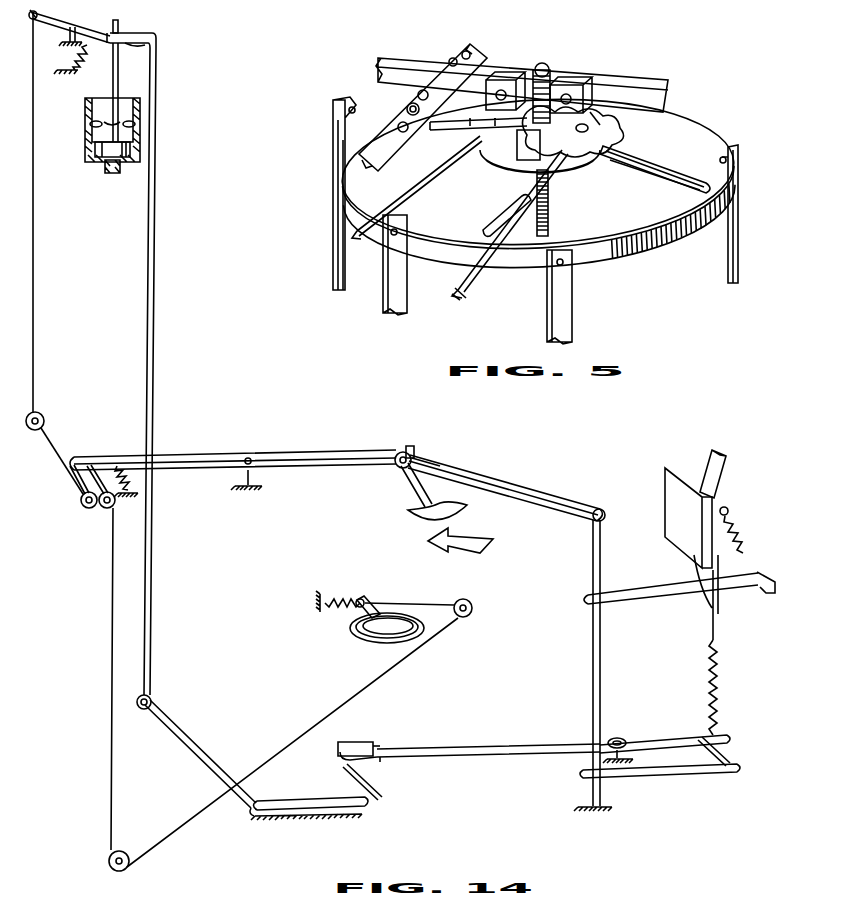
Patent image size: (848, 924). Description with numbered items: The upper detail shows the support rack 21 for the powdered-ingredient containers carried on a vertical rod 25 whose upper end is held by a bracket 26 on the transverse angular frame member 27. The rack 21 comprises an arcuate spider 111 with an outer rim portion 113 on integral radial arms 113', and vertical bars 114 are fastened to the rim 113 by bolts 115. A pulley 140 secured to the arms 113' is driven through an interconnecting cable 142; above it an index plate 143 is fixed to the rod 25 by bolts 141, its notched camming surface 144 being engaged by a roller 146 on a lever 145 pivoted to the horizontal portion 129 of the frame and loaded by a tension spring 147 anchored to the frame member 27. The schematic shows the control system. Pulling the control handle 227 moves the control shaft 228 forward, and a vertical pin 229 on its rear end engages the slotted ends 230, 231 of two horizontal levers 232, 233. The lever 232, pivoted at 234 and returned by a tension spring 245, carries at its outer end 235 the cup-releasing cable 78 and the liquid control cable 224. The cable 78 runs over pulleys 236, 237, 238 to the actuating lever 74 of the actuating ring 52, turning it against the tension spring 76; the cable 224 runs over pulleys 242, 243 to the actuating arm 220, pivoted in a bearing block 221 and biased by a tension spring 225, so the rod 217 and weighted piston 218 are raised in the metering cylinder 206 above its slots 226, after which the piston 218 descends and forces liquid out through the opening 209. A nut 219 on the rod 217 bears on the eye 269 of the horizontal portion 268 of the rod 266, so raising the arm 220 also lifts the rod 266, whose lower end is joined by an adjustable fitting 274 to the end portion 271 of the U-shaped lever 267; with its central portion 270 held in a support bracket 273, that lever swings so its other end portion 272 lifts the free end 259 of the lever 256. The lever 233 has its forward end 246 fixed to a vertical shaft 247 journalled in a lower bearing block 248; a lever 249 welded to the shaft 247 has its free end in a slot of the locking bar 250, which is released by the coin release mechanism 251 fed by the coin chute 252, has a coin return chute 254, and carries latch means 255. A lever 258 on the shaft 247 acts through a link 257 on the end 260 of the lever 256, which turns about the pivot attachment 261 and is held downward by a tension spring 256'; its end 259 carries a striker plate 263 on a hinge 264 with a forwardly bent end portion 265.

In FIG. 5, the support rack 21 is at (596, 266).
In FIG. 5, the rod or shaft 25 is at (552, 212).
In FIG. 5, the bracket 26 is at (545, 64).
In FIG. 5, the transverse angular frame member 27 is at (655, 80).
In FIG. 14, the actuating ring 52 is at (388, 646).
In FIG. 14, the radial actuating arm or lever 74 is at (362, 596).
In FIG. 14, the tension spring 76 is at (328, 598).
In FIG. 14, the cup releasing actuating cable 78 is at (412, 602).
In FIG. 5, the arcuate spider 111 is at (636, 160).
In FIG. 5, the outer rim portion 113 is at (670, 228).
In FIG. 5, the integral radial arms 113' is at (572, 198).
In FIG. 5, the vertical spaced bars 114 is at (340, 215).
In FIG. 5, the bolts 115 is at (333, 108).
In FIG. 5, the horizontal forwardly extending portion 129 is at (478, 38).
In FIG. 5, the mating pulley 140 is at (560, 172).
In FIG. 5, the bolts 141 is at (485, 120).
In FIG. 5, the interconnecting cable 142 is at (456, 288).
In FIG. 5, the index plate 143 is at (598, 112).
In FIG. 5, the camming surface 144 is at (606, 127).
In FIG. 5, the lever 145 is at (440, 152).
In FIG. 5, the roller 146 is at (520, 162).
In FIG. 5, the tension spring 147 is at (540, 72).
In FIG. 14, the metering cylinder 206 is at (85, 113).
In FIG. 14, the opening 209 is at (112, 173).
In FIG. 14, the rod 217 is at (119, 76).
In FIG. 14, the weighted piston 218 is at (95, 150).
In FIG. 14, the nut 219 is at (119, 30).
In FIG. 14, the actuating arm 220 is at (66, 22).
In FIG. 14, the bearing block 221 is at (72, 32).
In FIG. 14, the control cable 224 is at (34, 256).
In FIG. 14, the tension spring 225 is at (90, 60).
In FIG. 14, the peripheral openings or slots 226 is at (135, 124).
In FIG. 14, the control handle 227 is at (430, 520).
In FIG. 14, the control shaft 228 is at (410, 484).
In FIG. 14, the vertical pin 229 is at (413, 450).
In FIG. 14, the slotted end 230 is at (396, 452).
In FIG. 14, the slotted end 231 is at (436, 458).
In FIG. 14, the horizontal lever 232 is at (302, 453).
In FIG. 14, the horizontal lever 233 is at (512, 478).
In FIG. 14, the pivot 234 is at (258, 480).
In FIG. 14, the outer end 235 is at (76, 462).
In FIG. 14, the pulley 236 is at (106, 510).
In FIG. 14, the pulley 237 is at (112, 866).
In FIG. 14, the pulley 238 is at (472, 611).
In FIG. 14, the pulley 242 is at (86, 508).
In FIG. 14, the pulley 243 is at (45, 416).
In FIG. 14, the tension spring 245 is at (132, 480).
In FIG. 14, the forward end 246 is at (586, 510).
In FIG. 14, the rod or shaft 247 is at (600, 668).
In FIG. 14, the lower bearing block 248 is at (588, 806).
In FIG. 14, the lever 249 is at (680, 596).
In FIG. 14, the locking bar 250 is at (760, 570).
In FIG. 14, the coin release mechanism 251 is at (668, 527).
In FIG. 14, the coin chute 252 is at (722, 474).
In FIG. 14, the coin return chute 254 is at (696, 575).
In FIG. 14, the latch means 255 is at (736, 534).
In FIG. 14, the lever 256 is at (488, 739).
In FIG. 14, the tension spring 256' is at (737, 687).
In FIG. 14, the link 257 is at (732, 752).
In FIG. 14, the lever 258 is at (660, 780).
In FIG. 14, the free end 259 is at (380, 760).
In FIG. 14, the end 260 is at (670, 737).
In FIG. 14, the pivot attachment 261 is at (620, 738).
In FIG. 14, the striker plate 263 is at (343, 742).
In FIG. 14, the hinge 264 is at (340, 758).
In FIG. 14, the forwardly bent end portion 265 is at (378, 746).
In FIG. 14, the vertically disposed rod 266 is at (152, 260).
In FIG. 14, the elongated lever 267 is at (195, 740).
In FIG. 14, the horizontal portion 268 is at (158, 36).
In FIG. 14, the eye 269 is at (148, 46).
In FIG. 14, the central portion 270 is at (322, 800).
In FIG. 14, the end portion 271 is at (213, 782).
In FIG. 14, the end portion 272 is at (370, 790).
In FIG. 14, the support bracket 273 is at (290, 822).
In FIG. 14, the adjustable fitting 274 is at (154, 700).